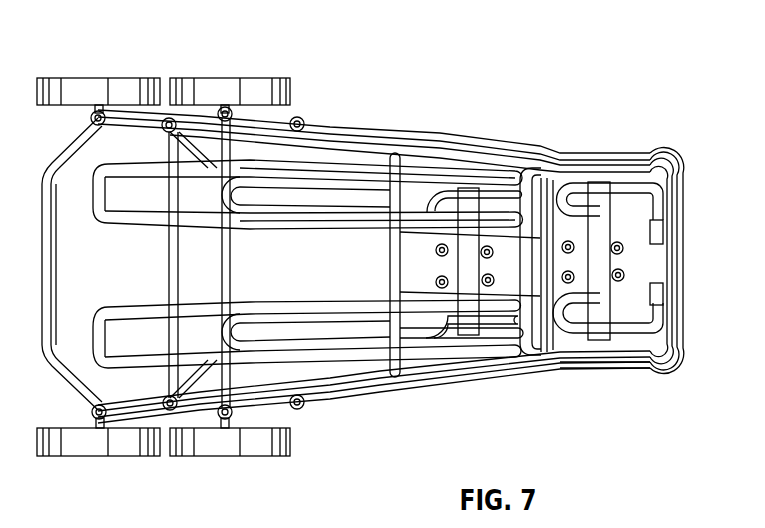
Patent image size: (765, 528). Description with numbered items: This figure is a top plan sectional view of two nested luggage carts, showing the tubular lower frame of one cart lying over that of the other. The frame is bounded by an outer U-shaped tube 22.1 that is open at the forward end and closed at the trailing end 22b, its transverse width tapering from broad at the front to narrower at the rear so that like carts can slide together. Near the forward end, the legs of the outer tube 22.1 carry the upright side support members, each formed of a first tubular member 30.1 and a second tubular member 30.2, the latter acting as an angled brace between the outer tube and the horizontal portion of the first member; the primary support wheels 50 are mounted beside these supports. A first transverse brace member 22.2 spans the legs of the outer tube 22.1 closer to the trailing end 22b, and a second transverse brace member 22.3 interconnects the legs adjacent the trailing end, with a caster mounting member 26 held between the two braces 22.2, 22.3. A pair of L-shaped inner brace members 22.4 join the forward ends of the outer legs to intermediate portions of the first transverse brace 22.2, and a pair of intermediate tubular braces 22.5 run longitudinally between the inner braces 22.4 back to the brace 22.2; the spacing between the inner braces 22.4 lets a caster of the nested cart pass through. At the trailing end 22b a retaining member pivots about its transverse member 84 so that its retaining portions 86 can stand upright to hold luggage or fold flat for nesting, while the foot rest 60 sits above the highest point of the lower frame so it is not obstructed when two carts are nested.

The primary support wheels 50 is at (92, 77).
The outer U-shaped tube 22.1 is at (127, 120).
The first tubular member of upright side support 30.1 is at (230, 110).
The second tubular member of upright side support 30.2 is at (171, 119).
The foot rest 60 is at (172, 262).
The intermediate tubular braces 22.5 is at (143, 166).
The inner brace members 22.4 is at (104, 215).
The retaining portions 86 is at (437, 190).
The second transverse brace member 22.3 is at (549, 174).
The transverse member 84 is at (557, 190).
The caster mounting member 26 is at (630, 247).
The first transverse brace member 22.2 is at (397, 259).
The trailing end 22b is at (540, 360).